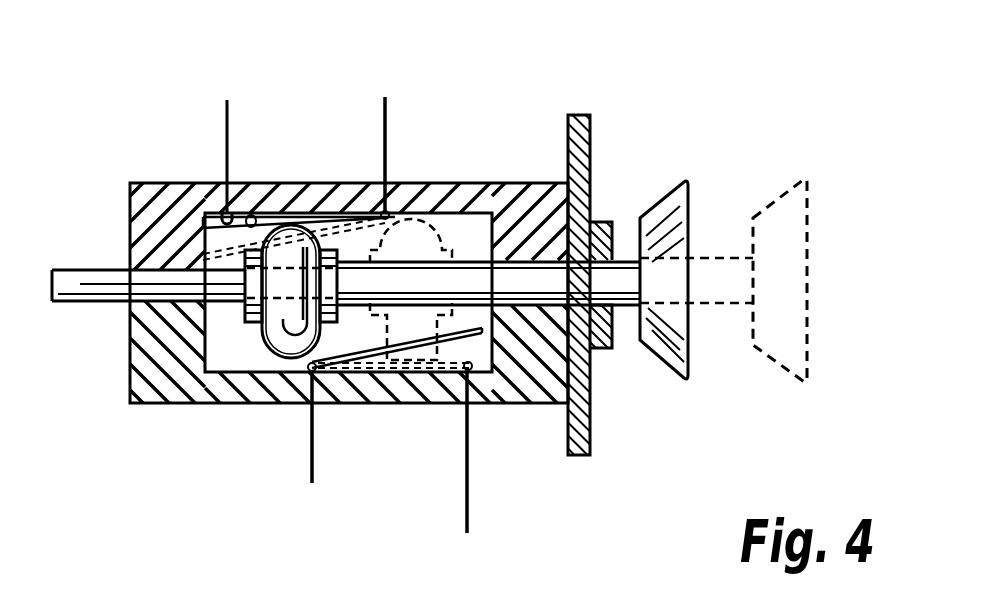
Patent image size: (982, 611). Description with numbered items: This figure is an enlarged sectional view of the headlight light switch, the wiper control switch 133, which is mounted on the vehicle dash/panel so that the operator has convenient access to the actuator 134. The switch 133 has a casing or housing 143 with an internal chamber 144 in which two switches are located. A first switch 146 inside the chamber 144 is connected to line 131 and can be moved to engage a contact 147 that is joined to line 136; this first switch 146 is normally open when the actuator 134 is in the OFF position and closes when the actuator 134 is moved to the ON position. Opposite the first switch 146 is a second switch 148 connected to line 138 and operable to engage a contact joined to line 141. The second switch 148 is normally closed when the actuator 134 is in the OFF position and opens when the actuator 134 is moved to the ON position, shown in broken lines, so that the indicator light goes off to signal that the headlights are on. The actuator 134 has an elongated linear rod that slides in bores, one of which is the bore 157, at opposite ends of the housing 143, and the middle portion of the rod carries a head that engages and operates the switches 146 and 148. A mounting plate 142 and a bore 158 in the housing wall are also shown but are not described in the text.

The wiper control switch 133 is at (173, 105).
The line 141 is at (230, 110).
The second switch 148 is at (252, 216).
The line 138 is at (388, 112).
The mounting plate 142 is at (568, 125).
The housing bore 158 is at (527, 256).
The actuator 134 is at (662, 200).
The housing 143 is at (140, 215).
The bore 157 is at (102, 302).
The internal chamber 144 is at (212, 365).
The line 131 is at (310, 455).
The first switch 146 is at (386, 366).
The line 136 is at (466, 470).
The contact 147 is at (478, 375).